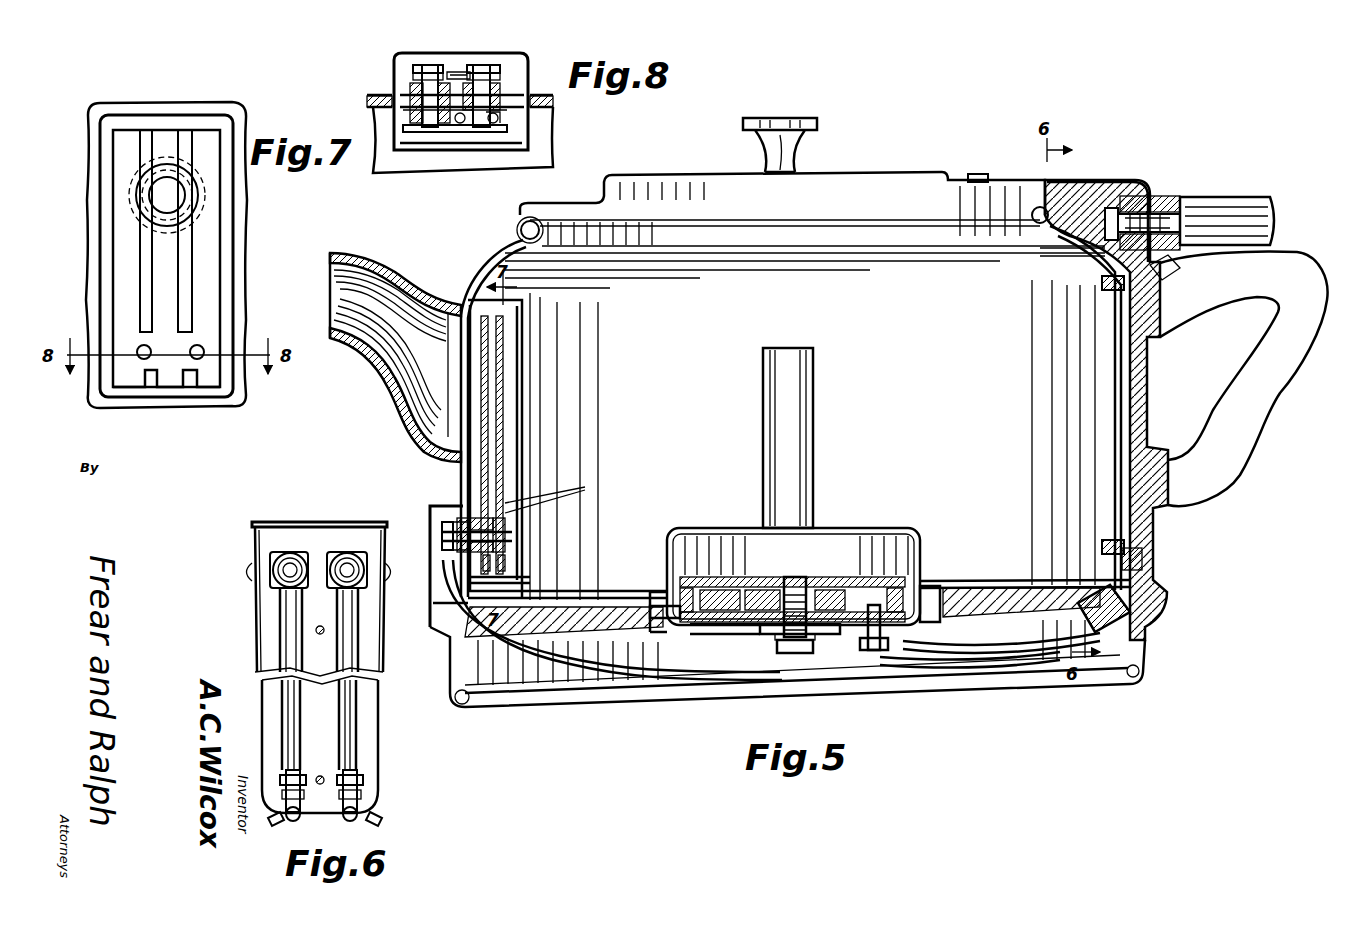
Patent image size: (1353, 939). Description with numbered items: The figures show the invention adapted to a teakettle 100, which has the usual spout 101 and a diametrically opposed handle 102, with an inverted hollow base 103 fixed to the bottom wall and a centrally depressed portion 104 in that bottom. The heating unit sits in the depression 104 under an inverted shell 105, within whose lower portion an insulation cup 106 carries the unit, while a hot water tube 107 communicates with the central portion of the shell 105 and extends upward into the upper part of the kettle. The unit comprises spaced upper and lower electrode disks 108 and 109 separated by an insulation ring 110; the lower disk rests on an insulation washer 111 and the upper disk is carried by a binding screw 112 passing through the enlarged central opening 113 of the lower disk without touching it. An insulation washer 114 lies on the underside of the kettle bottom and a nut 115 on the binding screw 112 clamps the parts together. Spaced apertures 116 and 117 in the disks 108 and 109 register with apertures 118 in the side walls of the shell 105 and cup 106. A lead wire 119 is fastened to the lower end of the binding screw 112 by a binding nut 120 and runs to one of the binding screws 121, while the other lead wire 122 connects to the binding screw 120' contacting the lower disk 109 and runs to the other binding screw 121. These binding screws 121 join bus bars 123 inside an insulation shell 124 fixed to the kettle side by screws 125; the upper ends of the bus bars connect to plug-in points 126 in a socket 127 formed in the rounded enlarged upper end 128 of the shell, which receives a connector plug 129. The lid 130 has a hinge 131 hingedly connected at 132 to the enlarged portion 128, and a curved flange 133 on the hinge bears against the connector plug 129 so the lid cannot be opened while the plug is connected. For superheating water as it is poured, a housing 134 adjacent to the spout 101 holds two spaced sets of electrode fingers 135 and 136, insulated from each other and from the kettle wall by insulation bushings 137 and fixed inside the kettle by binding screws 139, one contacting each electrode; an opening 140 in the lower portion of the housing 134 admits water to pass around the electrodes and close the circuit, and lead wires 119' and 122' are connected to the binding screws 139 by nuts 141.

In FIG. 7, the teakettle 100 is at (87, 163).
In FIG. 8, the teakettle 100 is at (370, 99).
In FIG. 5, the teakettle 100 is at (496, 265).
In FIG. 5, the spout 101 is at (385, 270).
In FIG. 5, the handle 102 is at (1255, 405).
In FIG. 5, the inverted hollow base 103 is at (1146, 637).
In FIG. 5, the centrally depressed portion 104 is at (957, 589).
In FIG. 5, the inverted shell 105 is at (918, 530).
In FIG. 5, the insulation cup 106 is at (667, 582).
In FIG. 5, the hot water tube 107 is at (814, 432).
In FIG. 5, the upper electrode disk 108 is at (870, 578).
In FIG. 5, the lower electrode disk 109 is at (837, 607).
In FIG. 5, the insulation ring 110 is at (920, 575).
In FIG. 5, the insulation washer 111 is at (775, 634).
In FIG. 5, the binding screw 112 is at (767, 580).
In FIG. 5, the enlarged central opening 113 is at (828, 577).
In FIG. 5, the insulation washer 114 is at (783, 640).
In FIG. 5, the nut 115 is at (798, 640).
In FIG. 5, the spaced apertures 116 is at (740, 580).
In FIG. 5, the spaced apertures 117 is at (735, 612).
In FIG. 5, the registering apertures 118 is at (673, 618).
In FIG. 6, the lead wire 119 is at (270, 795).
In FIG. 5, the lead wire 119 is at (896, 670).
In FIG. 5, the lead wire 119' is at (617, 659).
In FIG. 5, the binding nut 120 is at (796, 684).
In FIG. 5, the binding screw 120' is at (889, 698).
In FIG. 6, the binding screws 121 is at (300, 812).
In FIG. 5, the binding screws 121 is at (1132, 637).
In FIG. 6, the lead wire 122 is at (384, 795).
In FIG. 5, the lead wire 122 is at (990, 630).
In FIG. 5, the lead wire 122' is at (611, 652).
In FIG. 6, the bus bars 123 is at (280, 646).
In FIG. 5, the bus bars 123 is at (1150, 575).
In FIG. 6, the insulation shell 124 is at (370, 725).
In FIG. 5, the insulation shell 124 is at (1148, 400).
In FIG. 5, the screws 125 is at (1096, 283).
In FIG. 6, the plug-in points 126 is at (292, 565).
In FIG. 5, the plug-in points 126 is at (1145, 212).
In FIG. 5, the socket 127 is at (1137, 182).
In FIG. 5, the rounded enlarged upper end 128 is at (1155, 267).
In FIG. 5, the connector plug 129 is at (1210, 204).
In FIG. 5, the lid 130 is at (877, 172).
In FIG. 6, the hinge 131 is at (288, 522).
In FIG. 5, the hinge 131 is at (980, 175).
In FIG. 6, the hinge connection 132 is at (246, 570).
In FIG. 5, the hinge connection 132 is at (1060, 250).
In FIG. 5, the curved flange 133 is at (1160, 198).
In FIG. 7, the housing 134 is at (100, 234).
In FIG. 8, the housing 134 is at (530, 146).
In FIG. 5, the housing 134 is at (523, 423).
In FIG. 8, the electrode fingers 135 is at (519, 82).
In FIG. 5, the electrode fingers 135 is at (483, 453).
In FIG. 7, the electrode fingers 136 is at (205, 282).
In FIG. 8, the electrode fingers 136 is at (509, 128).
In FIG. 5, the electrode fingers 136 is at (507, 467).
In FIG. 8, the insulation bushings 137 is at (500, 86).
In FIG. 5, the insulation bushings 137 is at (455, 487).
In FIG. 7, the binding screws 139 is at (144, 360).
In FIG. 8, the binding screws 139 is at (457, 123).
In FIG. 5, the binding screws 139 is at (440, 537).
In FIG. 7, the opening 140 is at (200, 395).
In FIG. 8, the opening 140 is at (494, 123).
In FIG. 5, the opening 140 is at (503, 577).
In FIG. 8, the nuts 141 is at (452, 72).
In FIG. 5, the nuts 141 is at (440, 548).